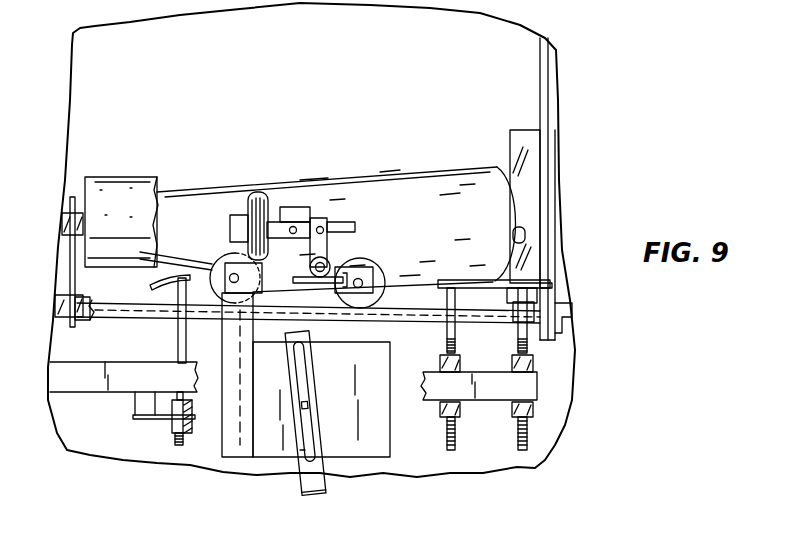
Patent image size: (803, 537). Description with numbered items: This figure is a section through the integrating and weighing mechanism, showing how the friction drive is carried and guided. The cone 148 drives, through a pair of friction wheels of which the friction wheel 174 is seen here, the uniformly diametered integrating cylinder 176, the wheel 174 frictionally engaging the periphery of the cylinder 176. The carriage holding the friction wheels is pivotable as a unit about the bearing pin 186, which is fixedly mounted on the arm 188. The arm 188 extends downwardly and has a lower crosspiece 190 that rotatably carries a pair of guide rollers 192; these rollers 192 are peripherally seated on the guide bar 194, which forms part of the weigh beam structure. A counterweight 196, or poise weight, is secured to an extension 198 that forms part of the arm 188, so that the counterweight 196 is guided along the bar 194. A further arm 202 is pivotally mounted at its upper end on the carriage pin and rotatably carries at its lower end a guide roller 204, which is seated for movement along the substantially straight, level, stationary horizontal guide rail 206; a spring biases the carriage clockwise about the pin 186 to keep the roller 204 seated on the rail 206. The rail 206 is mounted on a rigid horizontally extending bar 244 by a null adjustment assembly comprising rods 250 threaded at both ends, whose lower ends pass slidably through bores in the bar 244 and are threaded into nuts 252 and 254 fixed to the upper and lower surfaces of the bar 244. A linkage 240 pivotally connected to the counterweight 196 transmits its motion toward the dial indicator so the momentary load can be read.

The cone 148 is at (299, 178).
The friction wheel 174 is at (257, 192).
The integrating cylinder 176 is at (112, 179).
The bearing pin 186 is at (287, 207).
The arm 188 is at (312, 212).
The lower crosspiece 190 is at (316, 296).
The guide rollers 192 is at (225, 253).
The guide bar 194 is at (134, 302).
The counterweight 196 is at (370, 453).
The extension 198 is at (240, 332).
The arm 202 is at (335, 242).
The guide roller 204 is at (340, 262).
The guide rail 206 is at (175, 272).
The linkage 240 is at (297, 481).
The bar 244 is at (532, 387).
The rods 250 is at (178, 338).
The nuts 252 is at (168, 410).
The nuts 254 is at (173, 438).